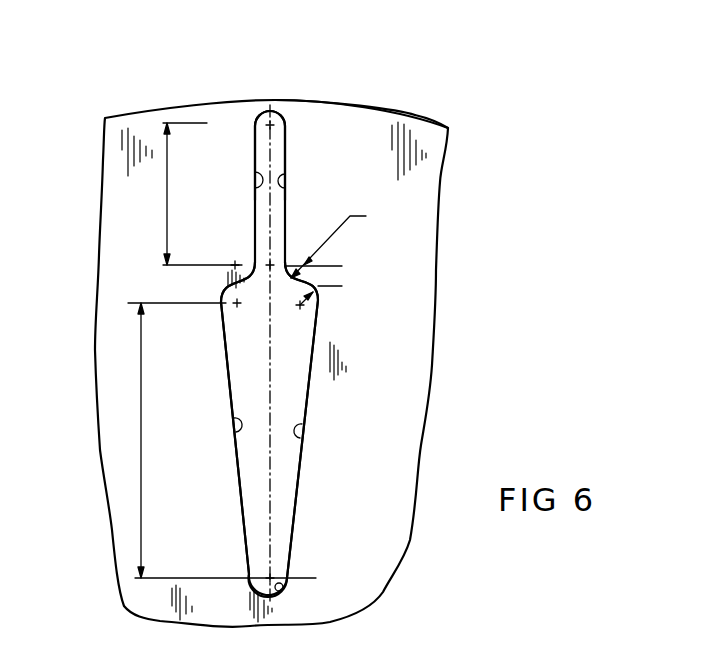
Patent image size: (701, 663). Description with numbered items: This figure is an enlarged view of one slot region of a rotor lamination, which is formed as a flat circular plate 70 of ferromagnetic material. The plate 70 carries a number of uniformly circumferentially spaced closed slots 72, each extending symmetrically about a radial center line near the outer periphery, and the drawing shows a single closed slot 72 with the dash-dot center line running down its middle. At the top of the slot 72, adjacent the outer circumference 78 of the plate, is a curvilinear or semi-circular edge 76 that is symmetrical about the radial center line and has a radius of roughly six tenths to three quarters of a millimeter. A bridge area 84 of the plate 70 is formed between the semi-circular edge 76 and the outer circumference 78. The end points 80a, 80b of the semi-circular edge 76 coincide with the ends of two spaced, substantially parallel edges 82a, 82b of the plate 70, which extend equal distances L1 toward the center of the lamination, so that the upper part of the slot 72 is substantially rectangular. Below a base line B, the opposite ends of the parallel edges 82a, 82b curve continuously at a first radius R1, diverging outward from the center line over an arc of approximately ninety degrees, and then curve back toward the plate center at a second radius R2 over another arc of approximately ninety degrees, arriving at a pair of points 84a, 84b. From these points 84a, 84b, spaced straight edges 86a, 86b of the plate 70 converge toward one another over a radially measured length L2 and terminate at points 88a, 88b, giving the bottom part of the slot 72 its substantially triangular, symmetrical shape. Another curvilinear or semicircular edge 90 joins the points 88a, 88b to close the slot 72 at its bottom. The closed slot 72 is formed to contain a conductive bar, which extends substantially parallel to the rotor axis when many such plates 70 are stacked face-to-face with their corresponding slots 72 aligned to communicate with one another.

The flat circular plate 70 is at (122, 137).
The closed slot 72 is at (256, 220).
The semi-circular edge 76 is at (285, 122).
The outer circumference 78 is at (413, 117).
The end point of semi-circular edge 80a is at (258, 124).
The end point of semi-circular edge 80b is at (285, 130).
The parallel edge 82a is at (233, 180).
The parallel edge 82b is at (288, 182).
The bridge area 84 is at (272, 101).
The point at end of second radius arc 84a is at (219, 301).
The point at end of second radius arc 84b is at (318, 302).
The straight edge 86a is at (236, 432).
The straight edge 86b is at (305, 436).
The terminal point of straight edge 88a is at (249, 572).
The terminal point of straight edge 88b is at (287, 582).
The semicircular edge 90 is at (284, 587).
The length of parallel edges L1 is at (166, 200).
The radially measured length of straight edges L2 is at (142, 472).
The base line B is at (325, 266).
The first radius R1 is at (343, 242).
The second radius R2 is at (336, 290).